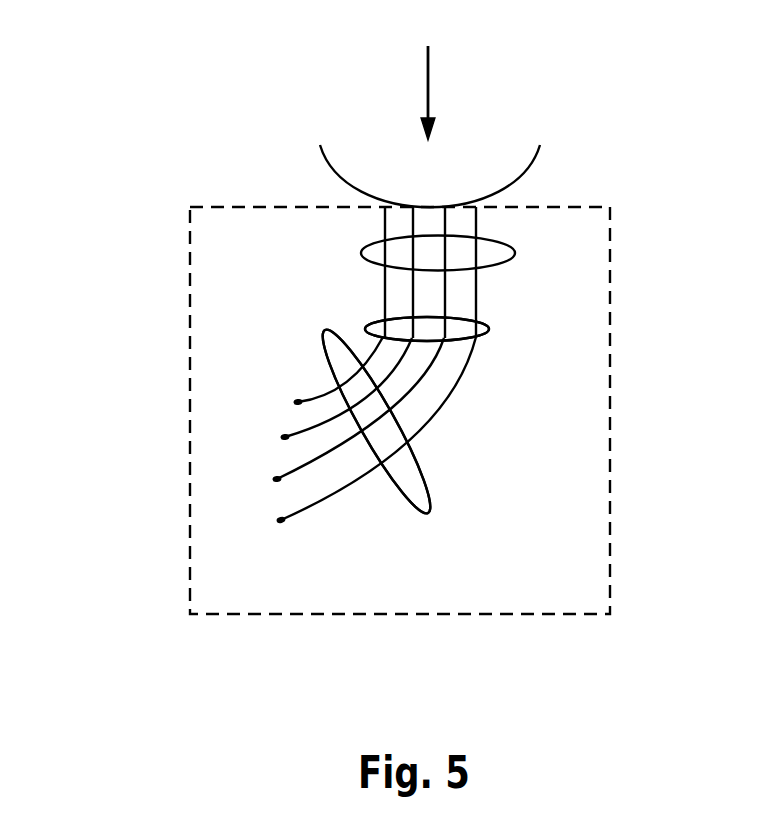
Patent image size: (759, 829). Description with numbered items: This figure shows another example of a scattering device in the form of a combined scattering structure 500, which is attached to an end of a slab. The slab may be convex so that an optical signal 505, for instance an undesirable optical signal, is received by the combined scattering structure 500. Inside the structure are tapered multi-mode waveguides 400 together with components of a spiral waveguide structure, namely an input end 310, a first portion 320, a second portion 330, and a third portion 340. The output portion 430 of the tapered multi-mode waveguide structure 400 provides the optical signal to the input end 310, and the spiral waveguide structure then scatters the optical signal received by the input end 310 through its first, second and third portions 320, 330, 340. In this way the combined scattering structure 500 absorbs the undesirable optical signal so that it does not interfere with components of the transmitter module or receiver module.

The combined scattering structure 500 is at (190, 206).
The optical signal 505 is at (429, 80).
The tapered multi-mode waveguide structure 400 is at (493, 267).
The output portion 430 is at (488, 333).
The input end 310 is at (427, 329).
The first portion 320 is at (405, 497).
The second portion 330 is at (377, 421).
The third portion 340 is at (278, 520).